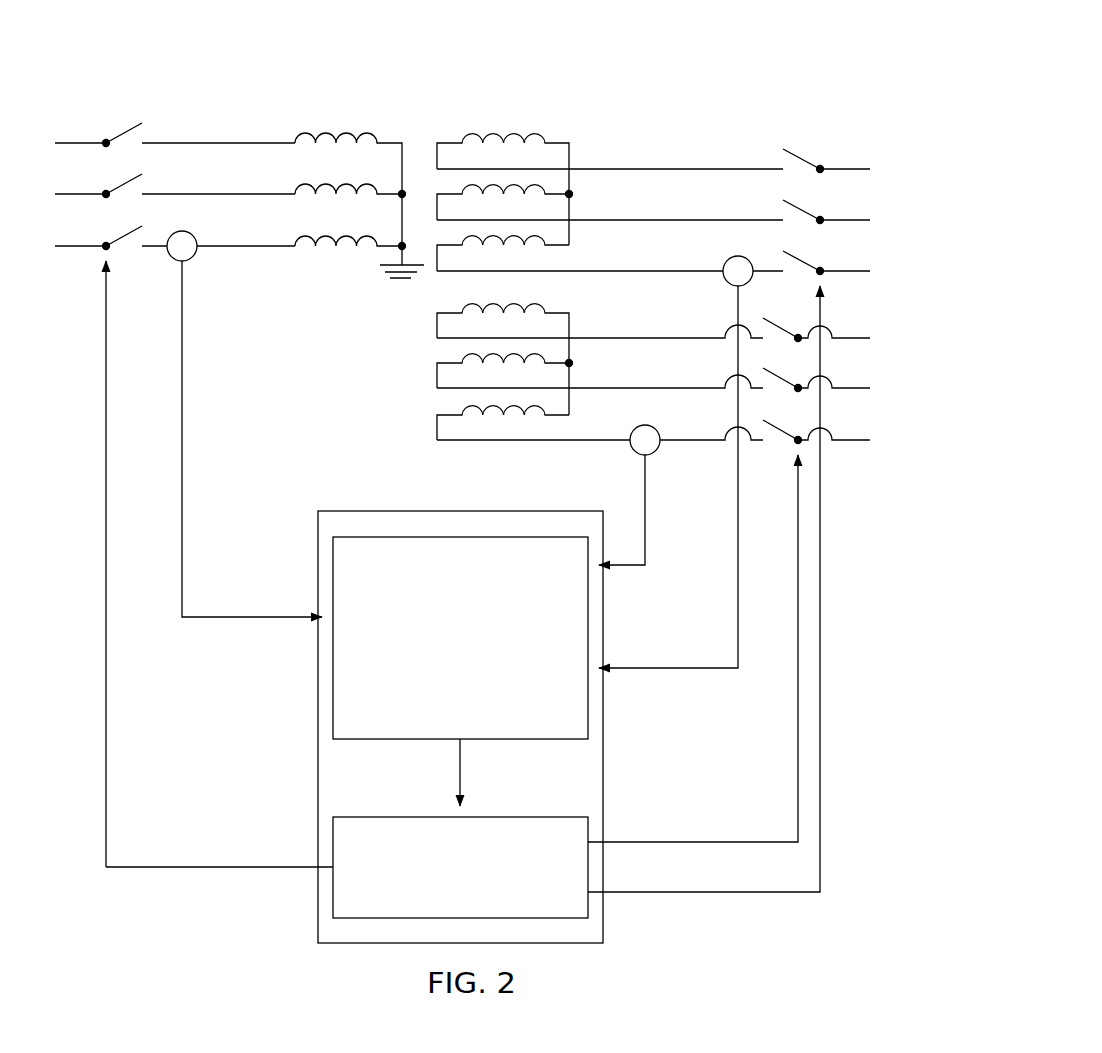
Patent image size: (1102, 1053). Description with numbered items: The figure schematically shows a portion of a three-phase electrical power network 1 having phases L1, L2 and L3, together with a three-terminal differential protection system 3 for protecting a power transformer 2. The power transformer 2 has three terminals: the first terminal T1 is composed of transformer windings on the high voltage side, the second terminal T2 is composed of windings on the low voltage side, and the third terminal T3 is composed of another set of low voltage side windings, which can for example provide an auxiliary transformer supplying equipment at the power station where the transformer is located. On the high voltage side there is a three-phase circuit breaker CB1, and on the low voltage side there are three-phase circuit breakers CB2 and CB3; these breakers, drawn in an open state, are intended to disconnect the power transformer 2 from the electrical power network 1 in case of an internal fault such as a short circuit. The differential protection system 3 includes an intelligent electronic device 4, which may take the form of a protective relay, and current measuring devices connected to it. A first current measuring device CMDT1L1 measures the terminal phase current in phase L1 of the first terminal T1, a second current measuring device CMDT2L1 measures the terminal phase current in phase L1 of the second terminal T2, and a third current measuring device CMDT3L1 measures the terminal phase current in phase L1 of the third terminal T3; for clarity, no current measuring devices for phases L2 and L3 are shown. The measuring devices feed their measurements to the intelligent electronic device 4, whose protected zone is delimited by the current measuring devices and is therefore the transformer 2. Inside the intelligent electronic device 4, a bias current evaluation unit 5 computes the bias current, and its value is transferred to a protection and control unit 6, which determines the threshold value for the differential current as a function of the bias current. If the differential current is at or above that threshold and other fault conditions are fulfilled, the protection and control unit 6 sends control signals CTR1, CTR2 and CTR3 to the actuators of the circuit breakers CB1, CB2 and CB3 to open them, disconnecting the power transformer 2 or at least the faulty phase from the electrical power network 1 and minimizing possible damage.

The electrical power network 1 is at (183, 80).
The power transformer 2 is at (434, 106).
The three-terminal differential protection system 3 is at (222, 908).
The intelligent electronic device 4 is at (330, 768).
The bias current evaluation unit 5 is at (467, 657).
The protection and control unit 6 is at (469, 882).
The three-phase circuit breaker CB1 is at (120, 117).
The three-phase circuit breaker CB2 is at (806, 136).
The three-phase circuit breaker CB3 is at (774, 449).
The first terminal T1 is at (340, 118).
The second terminal T2 is at (509, 113).
The third terminal T3 is at (410, 386).
The phase L1 is at (70, 248).
The phase L2 is at (68, 195).
The phase L3 is at (88, 146).
The first current measuring device CMDT1L1 is at (212, 256).
The second current measuring device CMDT2L1 is at (733, 253).
The third current measuring device CMDT3L1 is at (613, 452).
The control signal CTR1 is at (212, 865).
The control signal CTR2 is at (705, 893).
The control signal CTR3 is at (745, 840).